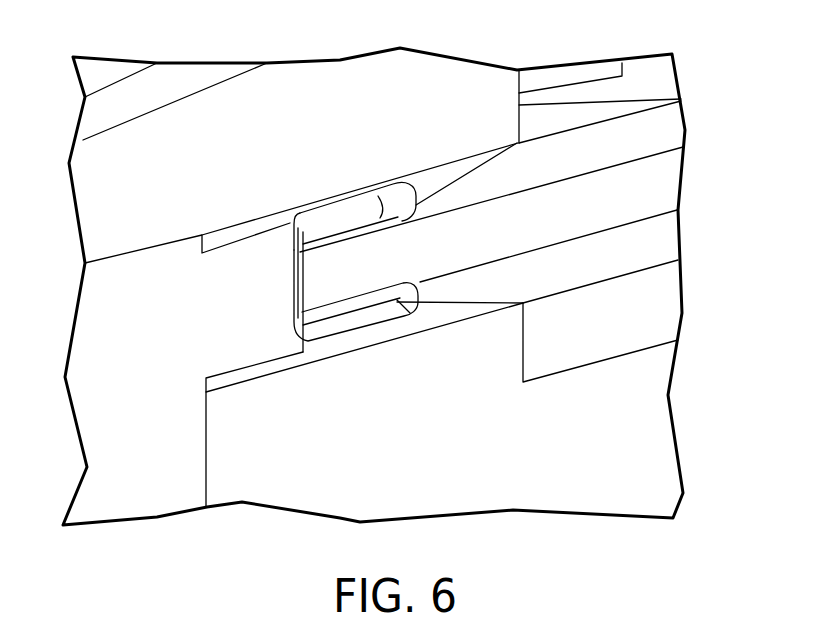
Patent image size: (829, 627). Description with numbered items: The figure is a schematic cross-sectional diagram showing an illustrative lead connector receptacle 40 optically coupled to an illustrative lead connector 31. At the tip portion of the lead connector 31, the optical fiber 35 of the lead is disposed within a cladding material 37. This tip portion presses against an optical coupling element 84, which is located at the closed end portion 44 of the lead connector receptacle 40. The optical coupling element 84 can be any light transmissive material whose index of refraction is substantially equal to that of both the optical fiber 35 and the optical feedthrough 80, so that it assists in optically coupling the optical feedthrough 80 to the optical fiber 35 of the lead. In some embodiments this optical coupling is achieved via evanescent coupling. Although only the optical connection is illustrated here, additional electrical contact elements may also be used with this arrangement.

The lead connector 31 is at (553, 110).
The optical fiber 35 is at (643, 188).
The cladding material 37 is at (647, 248).
The lead connector receptacle 40 is at (370, 138).
The closed end portion 44 is at (303, 203).
The optical feedthrough 80 is at (225, 290).
The optical coupling element 84 is at (357, 322).